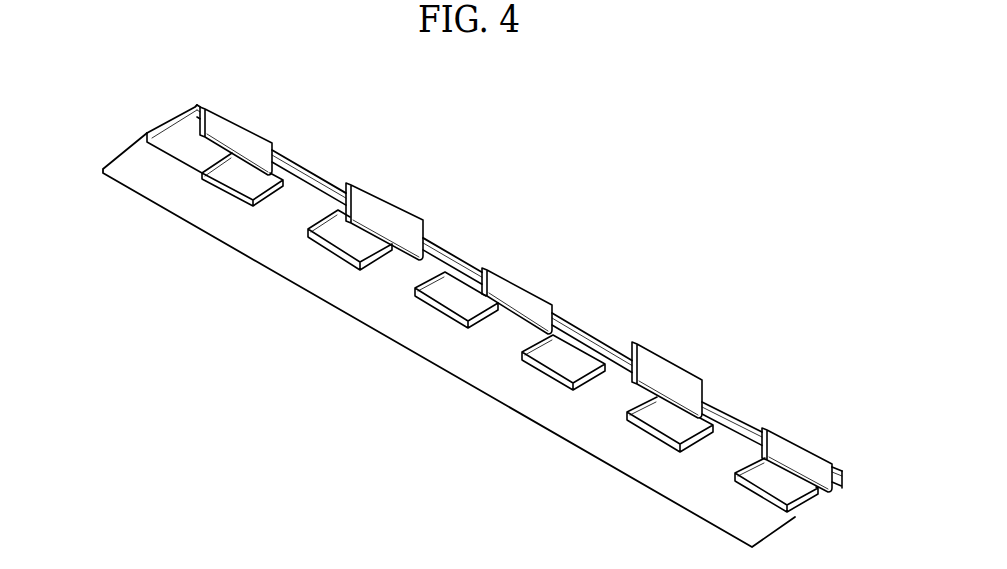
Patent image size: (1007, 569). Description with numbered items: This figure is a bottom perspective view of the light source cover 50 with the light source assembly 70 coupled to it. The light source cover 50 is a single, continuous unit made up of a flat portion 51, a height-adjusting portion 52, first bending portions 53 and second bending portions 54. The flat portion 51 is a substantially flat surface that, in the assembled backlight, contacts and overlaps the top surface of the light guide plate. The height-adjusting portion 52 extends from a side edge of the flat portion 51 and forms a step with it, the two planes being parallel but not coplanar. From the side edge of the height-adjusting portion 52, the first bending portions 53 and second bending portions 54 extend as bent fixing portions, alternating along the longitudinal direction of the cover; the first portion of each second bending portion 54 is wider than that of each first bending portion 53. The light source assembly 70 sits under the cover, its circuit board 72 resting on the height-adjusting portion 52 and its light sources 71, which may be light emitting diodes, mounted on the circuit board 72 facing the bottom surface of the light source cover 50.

The light source cover 50 is at (472, 309).
The flat portion 51 is at (270, 245).
The height-adjusting portion 52 is at (168, 119).
The first bending portion 53 is at (233, 130).
The second bending portion 54 is at (394, 210).
The light source assembly 70 is at (214, 216).
The light source 71 is at (222, 178).
The circuit board 72 is at (178, 143).